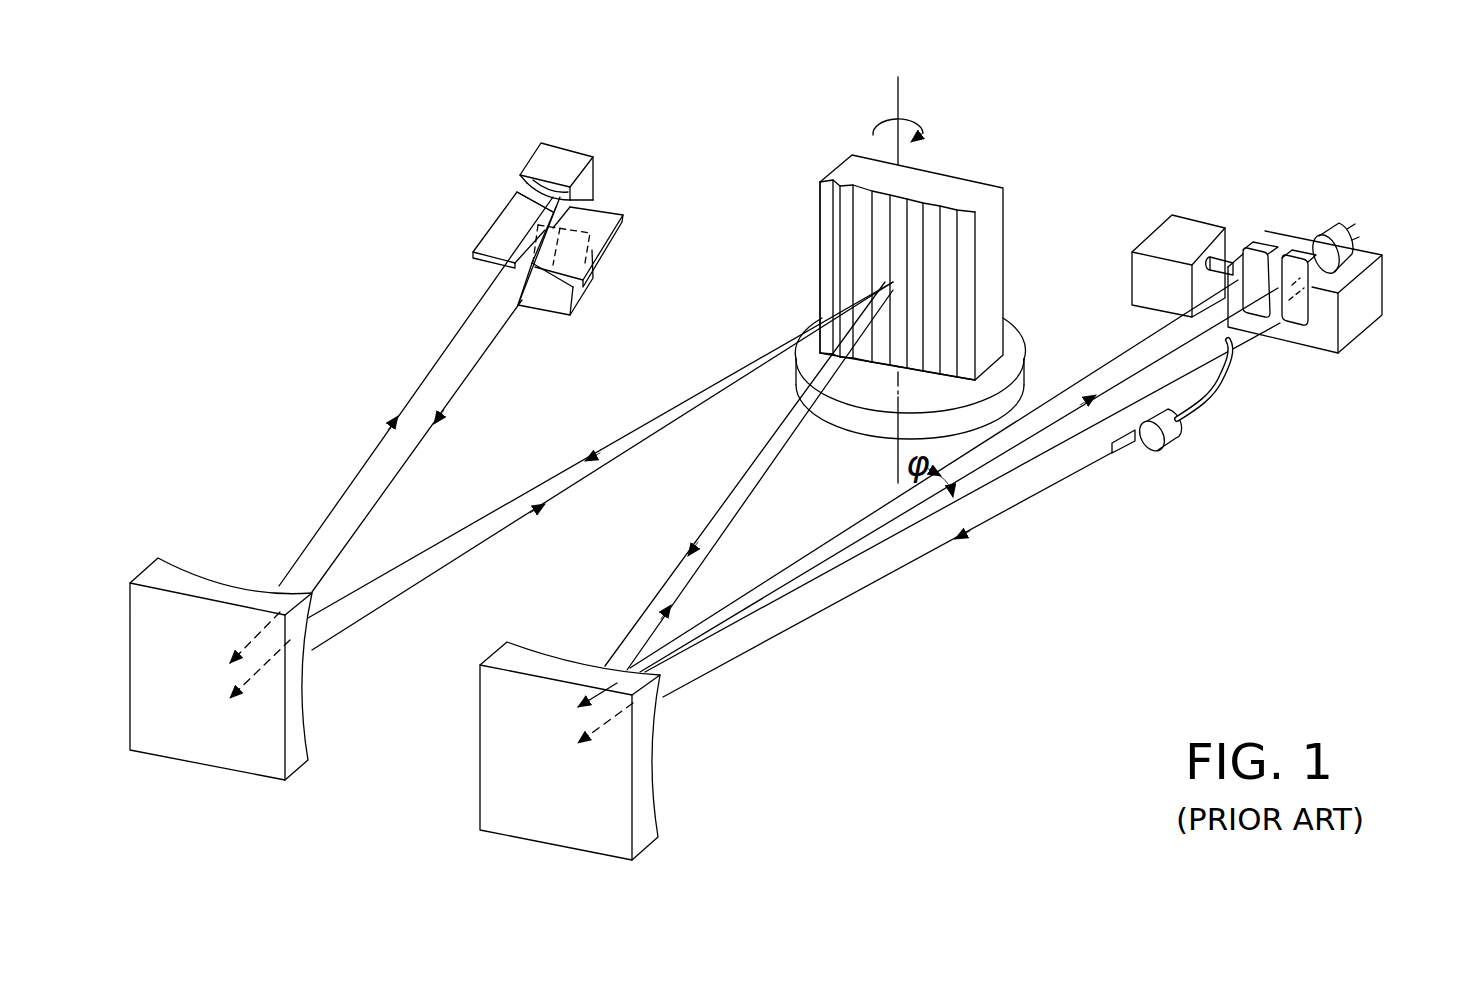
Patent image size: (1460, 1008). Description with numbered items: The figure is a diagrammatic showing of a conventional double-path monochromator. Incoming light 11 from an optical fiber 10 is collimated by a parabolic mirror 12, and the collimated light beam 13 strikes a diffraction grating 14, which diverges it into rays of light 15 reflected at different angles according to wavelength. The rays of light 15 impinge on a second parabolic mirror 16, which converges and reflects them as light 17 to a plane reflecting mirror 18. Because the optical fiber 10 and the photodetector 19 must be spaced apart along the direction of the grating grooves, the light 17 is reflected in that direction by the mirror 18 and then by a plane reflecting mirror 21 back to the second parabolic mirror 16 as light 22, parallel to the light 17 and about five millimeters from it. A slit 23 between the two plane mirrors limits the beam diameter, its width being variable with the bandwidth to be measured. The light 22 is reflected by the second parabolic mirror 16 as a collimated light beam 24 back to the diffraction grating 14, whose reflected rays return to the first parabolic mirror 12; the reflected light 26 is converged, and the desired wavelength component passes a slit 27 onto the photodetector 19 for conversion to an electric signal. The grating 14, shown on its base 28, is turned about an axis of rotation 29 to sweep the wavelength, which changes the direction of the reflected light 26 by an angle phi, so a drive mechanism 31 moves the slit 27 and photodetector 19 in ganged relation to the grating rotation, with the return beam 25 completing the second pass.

The optical fiber 10 is at (1133, 447).
The incoming light 11 is at (900, 570).
The parabolic mirror 12 is at (483, 772).
The collimated light beam 13 is at (727, 527).
The diffraction grating 14 is at (970, 182).
The rays of light 15 is at (523, 498).
The second parabolic mirror 16 is at (187, 757).
The light 17 is at (362, 465).
The plane reflecting mirror 18 is at (560, 155).
The photodetector 19 is at (1377, 263).
The plane reflecting mirror 21 is at (583, 300).
The reflected light 22 is at (382, 495).
The slit 23 is at (590, 215).
The collimated light beam 24 is at (523, 517).
The light beam 25 is at (722, 515).
The reflected light 26 is at (876, 528).
The slit 27 is at (1277, 247).
The rotating base 28 is at (1025, 366).
The axis of rotation 29 is at (898, 90).
The drive mechanism 31 is at (1183, 217).